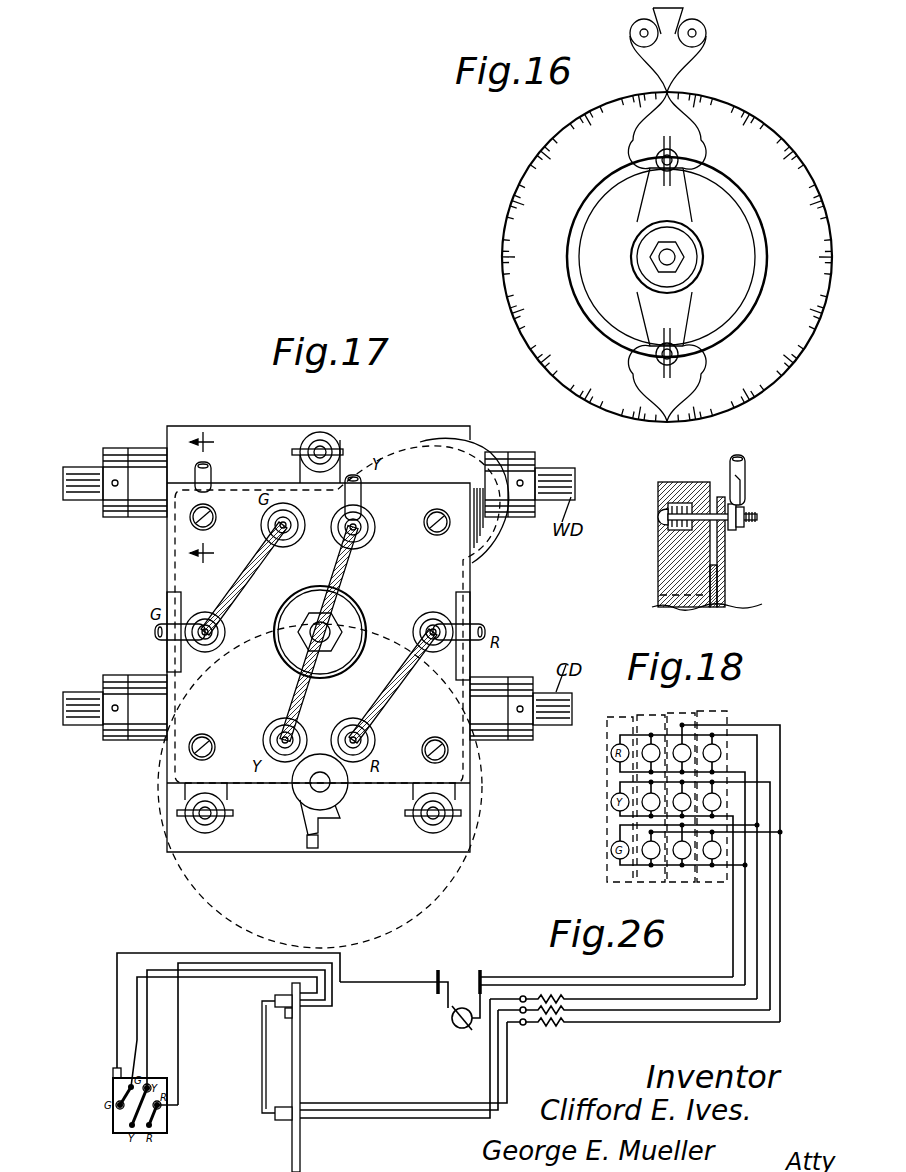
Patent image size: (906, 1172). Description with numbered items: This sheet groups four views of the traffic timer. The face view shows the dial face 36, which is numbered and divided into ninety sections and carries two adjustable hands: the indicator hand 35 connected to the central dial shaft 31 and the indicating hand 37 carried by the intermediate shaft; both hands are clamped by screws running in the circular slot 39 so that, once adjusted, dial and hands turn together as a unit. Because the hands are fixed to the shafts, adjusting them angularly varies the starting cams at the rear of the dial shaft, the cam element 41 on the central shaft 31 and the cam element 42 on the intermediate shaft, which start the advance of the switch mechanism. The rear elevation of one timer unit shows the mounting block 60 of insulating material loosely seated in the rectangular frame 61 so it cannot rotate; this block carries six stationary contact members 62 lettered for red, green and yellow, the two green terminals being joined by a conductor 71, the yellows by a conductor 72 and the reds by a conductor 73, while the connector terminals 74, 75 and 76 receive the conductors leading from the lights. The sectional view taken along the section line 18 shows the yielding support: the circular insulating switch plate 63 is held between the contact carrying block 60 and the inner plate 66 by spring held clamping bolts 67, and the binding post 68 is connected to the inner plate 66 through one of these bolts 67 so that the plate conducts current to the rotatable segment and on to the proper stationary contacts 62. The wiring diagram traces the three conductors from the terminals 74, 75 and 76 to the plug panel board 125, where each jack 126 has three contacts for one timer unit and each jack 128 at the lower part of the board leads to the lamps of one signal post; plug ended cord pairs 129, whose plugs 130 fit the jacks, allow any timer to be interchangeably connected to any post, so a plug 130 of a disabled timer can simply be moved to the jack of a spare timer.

In FIG. 17, the section line 18- 18 is at (217, 500).
In FIG. 17, the dial shaft 31 is at (326, 795).
In FIG. 16, the indicator hand 35 is at (659, 396).
In FIG. 16, the dial face 36 is at (578, 383).
In FIG. 17, the dial face 36 is at (486, 770).
In FIG. 16, the indicating hand 37 is at (654, 206).
In FIG. 16, the circular slot 39 is at (578, 213).
In FIG. 17, the cam element 41 is at (337, 614).
In FIG. 17, the cam element 42 is at (319, 848).
In FIG. 18, the mounting block 60 is at (668, 572).
In FIG. 17, the frame 61 is at (170, 596).
In FIG. 17, the contact members 62 is at (432, 620).
In FIG. 18, the switch plate 63 is at (713, 605).
In FIG. 18, the inner plate 66 is at (727, 545).
In FIG. 17, the clamping bolts 67 is at (195, 520).
In FIG. 18, the clamping bolts 67 is at (660, 516).
In FIG. 17, the binding post 68 is at (212, 474).
In FIG. 18, the binding post 68 is at (746, 470).
In FIG. 26, the binding post 68 is at (113, 1071).
In FIG. 17, the conductor 71 is at (248, 590).
In FIG. 26, the conductor 71 is at (124, 1110).
In FIG. 17, the conductor 72 is at (356, 582).
In FIG. 26, the conductor 72 is at (138, 1120).
In FIG. 17, the conductor 73 is at (392, 688).
In FIG. 26, the conductor 73 is at (153, 1122).
In FIG. 17, the connector terminal 74 is at (155, 632).
In FIG. 26, the connector terminal 74 is at (118, 1104).
In FIG. 17, the connector terminal 75 is at (362, 490).
In FIG. 26, the connector terminal 75 is at (149, 1084).
In FIG. 17, the connector terminal 76 is at (490, 633).
In FIG. 26, the connector terminal 76 is at (162, 1108).
In FIG. 26, the plug panel board 125 is at (301, 1068).
In FIG. 26, the jack 126 is at (292, 1013).
In FIG. 26, the jack 128 is at (288, 1122).
In FIG. 26, the cord pair 129 is at (262, 1010).
In FIG. 26, the plug 130 is at (275, 1000).